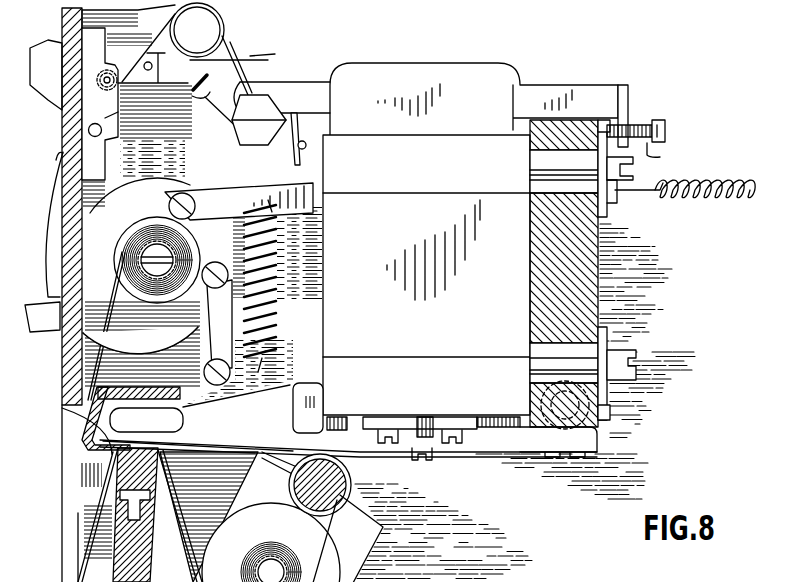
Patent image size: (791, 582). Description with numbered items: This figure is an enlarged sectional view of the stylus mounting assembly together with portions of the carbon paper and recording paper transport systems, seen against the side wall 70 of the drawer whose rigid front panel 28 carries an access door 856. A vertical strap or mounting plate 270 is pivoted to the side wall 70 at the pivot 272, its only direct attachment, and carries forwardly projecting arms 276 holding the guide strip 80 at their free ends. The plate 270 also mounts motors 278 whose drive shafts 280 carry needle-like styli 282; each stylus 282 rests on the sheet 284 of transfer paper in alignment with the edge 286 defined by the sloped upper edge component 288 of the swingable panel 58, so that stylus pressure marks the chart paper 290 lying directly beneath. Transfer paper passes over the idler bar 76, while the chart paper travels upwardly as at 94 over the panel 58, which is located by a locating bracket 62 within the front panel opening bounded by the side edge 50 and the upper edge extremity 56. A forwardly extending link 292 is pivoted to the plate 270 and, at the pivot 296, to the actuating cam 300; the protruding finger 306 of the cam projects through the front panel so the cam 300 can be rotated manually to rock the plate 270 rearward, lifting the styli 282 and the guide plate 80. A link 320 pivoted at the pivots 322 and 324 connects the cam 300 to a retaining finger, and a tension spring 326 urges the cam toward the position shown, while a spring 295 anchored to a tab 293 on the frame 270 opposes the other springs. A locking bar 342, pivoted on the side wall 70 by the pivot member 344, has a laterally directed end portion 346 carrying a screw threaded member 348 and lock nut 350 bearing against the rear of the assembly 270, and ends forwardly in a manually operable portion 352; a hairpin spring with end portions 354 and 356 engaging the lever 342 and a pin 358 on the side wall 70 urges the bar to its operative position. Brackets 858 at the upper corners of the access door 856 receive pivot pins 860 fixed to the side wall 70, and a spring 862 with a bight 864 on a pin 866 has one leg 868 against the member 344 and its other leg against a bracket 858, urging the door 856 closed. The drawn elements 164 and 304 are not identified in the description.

The rigid front panel 28 is at (88, 17).
The side edge of opening 50 is at (67, 572).
The upper edge extremity of opening 56 is at (62, 412).
The swingable panel 58 is at (172, 576).
The locating bracket 62 is at (178, 468).
The side wall 70 is at (239, 177).
The idler bar 76 is at (333, 524).
The guide strip 80 is at (113, 382).
The upwardly passing chart paper 94 is at (200, 573).
The bearing 164 is at (157, 242).
The vertical strap or mounting plate 270 is at (604, 270).
The pivot 272 is at (609, 432).
The forwardly projecting arm 276 is at (290, 388).
The motor 278 is at (321, 308).
The drive shaft 280 is at (433, 447).
The stylus 282 is at (362, 458).
The sheet of transfer paper 284 is at (223, 452).
The edge 286 is at (117, 478).
The sloped upper edge component 288 is at (135, 460).
The chart paper 290 is at (85, 464).
The link 292 is at (312, 195).
The tab 293 is at (623, 200).
The spring 295 is at (740, 183).
The pivot 296 is at (187, 195).
The actuating cam member 300 is at (141, 266).
The hub 304 is at (140, 247).
The protruding finger 306 is at (35, 303).
The link 320 is at (205, 323).
The pivot 322 is at (230, 250).
The pivot 324 is at (260, 368).
The tension spring 326 is at (283, 272).
The locking bar 342 is at (310, 95).
The pivot member 344 is at (270, 100).
The laterally directed end portion 346 is at (623, 105).
The screw threaded member 348 is at (660, 156).
The lock nut 350 is at (635, 122).
The manually operable portion 352 is at (42, 57).
The spring end portion 354 is at (208, 90).
The spring end portion 356 is at (300, 128).
The pin 358 is at (306, 145).
The access door member 856 is at (63, 153).
The bracket 858 is at (115, 115).
The pivot pin member 860 is at (100, 134).
The spring member 862 is at (250, 42).
The loop or bight portion 864 is at (245, 42).
The pin 866 is at (213, 20).
The spring leg 868 is at (262, 50).